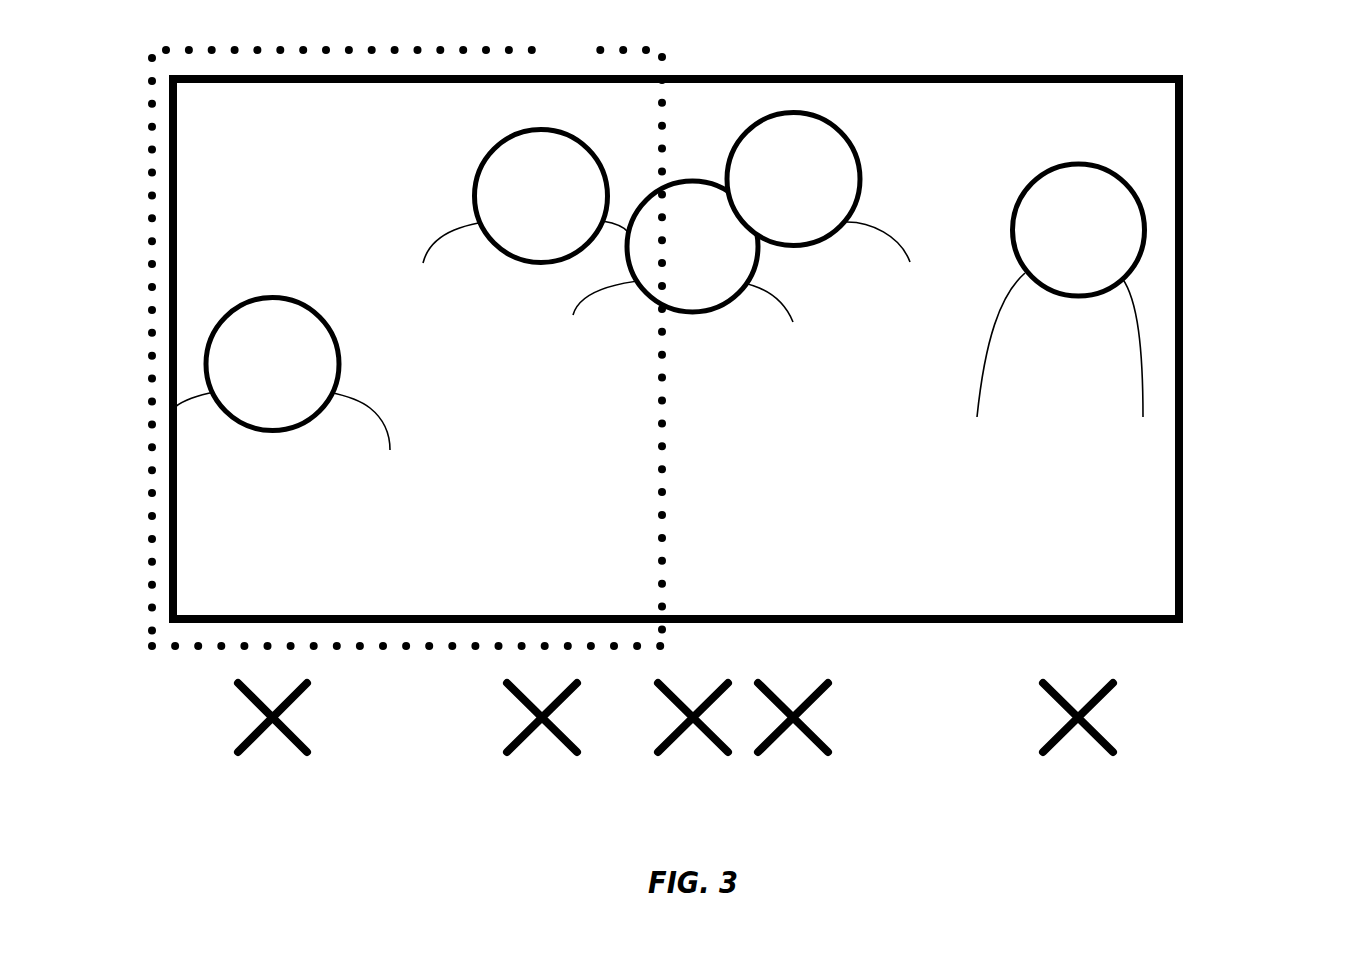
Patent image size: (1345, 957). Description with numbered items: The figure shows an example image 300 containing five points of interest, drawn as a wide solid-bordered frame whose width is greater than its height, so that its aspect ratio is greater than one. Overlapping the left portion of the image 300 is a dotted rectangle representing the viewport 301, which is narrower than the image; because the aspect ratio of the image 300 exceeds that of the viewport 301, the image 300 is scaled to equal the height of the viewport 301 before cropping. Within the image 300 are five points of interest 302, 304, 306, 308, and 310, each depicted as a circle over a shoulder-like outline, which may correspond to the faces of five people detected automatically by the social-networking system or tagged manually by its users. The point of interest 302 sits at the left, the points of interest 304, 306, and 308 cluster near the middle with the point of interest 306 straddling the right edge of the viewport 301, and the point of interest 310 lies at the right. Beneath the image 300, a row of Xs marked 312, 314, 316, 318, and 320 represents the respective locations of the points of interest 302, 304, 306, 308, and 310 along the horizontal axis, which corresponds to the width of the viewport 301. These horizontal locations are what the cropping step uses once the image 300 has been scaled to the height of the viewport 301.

The image 300 is at (1183, 245).
The viewport 301 is at (395, 50).
The point of interest 302 is at (273, 296).
The point of interest 304 is at (542, 262).
The point of interest 306 is at (692, 179).
The point of interest 308 is at (860, 172).
The point of interest 310 is at (1078, 297).
The X mark 312 is at (238, 752).
The X mark 314 is at (507, 752).
The X mark 316 is at (713, 750).
The X mark 318 is at (775, 742).
The X mark 320 is at (1113, 752).